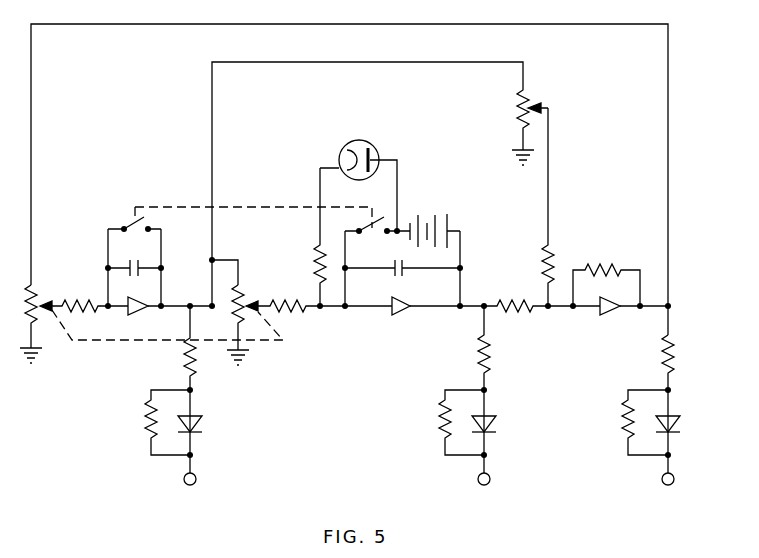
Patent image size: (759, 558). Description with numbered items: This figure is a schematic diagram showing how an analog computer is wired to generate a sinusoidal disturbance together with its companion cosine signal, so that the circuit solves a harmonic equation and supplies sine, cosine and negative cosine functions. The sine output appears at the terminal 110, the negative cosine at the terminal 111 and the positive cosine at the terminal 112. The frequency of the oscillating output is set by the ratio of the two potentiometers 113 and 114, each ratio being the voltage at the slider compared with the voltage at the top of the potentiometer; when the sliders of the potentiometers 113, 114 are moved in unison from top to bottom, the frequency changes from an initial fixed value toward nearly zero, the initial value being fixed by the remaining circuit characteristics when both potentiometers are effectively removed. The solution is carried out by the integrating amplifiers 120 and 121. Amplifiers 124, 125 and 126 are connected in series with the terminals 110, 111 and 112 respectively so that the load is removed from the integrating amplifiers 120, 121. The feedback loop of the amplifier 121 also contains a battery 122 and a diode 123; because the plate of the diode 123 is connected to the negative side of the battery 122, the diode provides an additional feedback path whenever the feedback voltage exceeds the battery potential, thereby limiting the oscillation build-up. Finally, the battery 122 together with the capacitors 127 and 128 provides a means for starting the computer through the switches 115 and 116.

The terminal 110 is at (197, 479).
The terminal 111 is at (491, 479).
The terminal 112 is at (675, 479).
The potentiometer 113 is at (37, 289).
The potentiometer 114 is at (244, 291).
The switch 115 is at (146, 218).
The switch 116 is at (366, 227).
The integrating amplifier 120 is at (140, 311).
The integrating amplifier 121 is at (404, 311).
The battery 122 is at (448, 222).
The diode 123 is at (360, 149).
The amplifier 124 is at (203, 416).
The amplifier 125 is at (497, 416).
The amplifier 126 is at (681, 416).
The capacitor 127 is at (134, 271).
The capacitor 128 is at (405, 273).